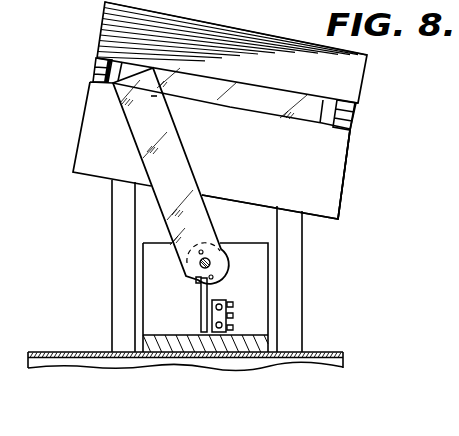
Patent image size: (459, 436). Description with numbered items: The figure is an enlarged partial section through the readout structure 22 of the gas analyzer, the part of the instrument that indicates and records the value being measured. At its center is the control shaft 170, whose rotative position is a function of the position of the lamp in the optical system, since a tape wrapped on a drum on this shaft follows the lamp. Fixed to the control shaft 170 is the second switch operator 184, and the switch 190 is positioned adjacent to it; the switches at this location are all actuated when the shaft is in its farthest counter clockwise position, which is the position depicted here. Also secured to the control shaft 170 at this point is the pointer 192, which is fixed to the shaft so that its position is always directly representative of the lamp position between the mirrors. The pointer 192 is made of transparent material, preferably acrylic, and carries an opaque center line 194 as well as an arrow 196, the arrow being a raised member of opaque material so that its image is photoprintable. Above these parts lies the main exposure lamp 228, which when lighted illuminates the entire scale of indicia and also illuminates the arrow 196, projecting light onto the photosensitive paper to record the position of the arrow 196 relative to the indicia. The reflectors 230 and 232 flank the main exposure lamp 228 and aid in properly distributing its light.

The readout structure 22 is at (362, 158).
The control shaft 170 is at (208, 261).
The second switch operator 184 is at (208, 291).
The switch 190 is at (232, 310).
The pointer 192 is at (137, 127).
The opaque center line 194 is at (173, 175).
The arrow 196 is at (140, 99).
The main exposure lamp 228 is at (263, 107).
The reflector 230 is at (345, 78).
The reflector 232 is at (320, 187).